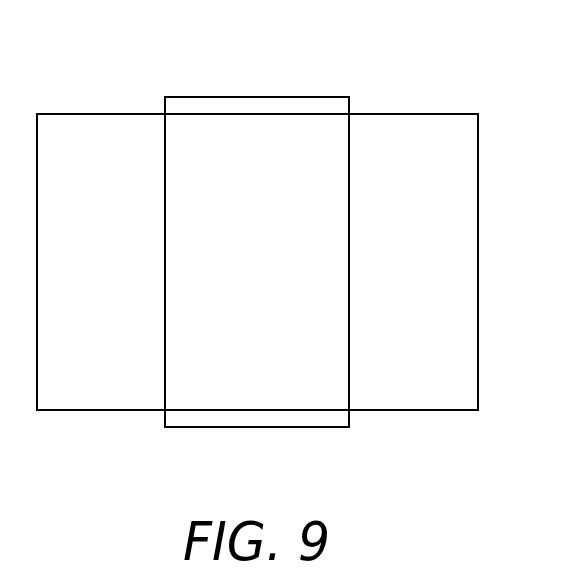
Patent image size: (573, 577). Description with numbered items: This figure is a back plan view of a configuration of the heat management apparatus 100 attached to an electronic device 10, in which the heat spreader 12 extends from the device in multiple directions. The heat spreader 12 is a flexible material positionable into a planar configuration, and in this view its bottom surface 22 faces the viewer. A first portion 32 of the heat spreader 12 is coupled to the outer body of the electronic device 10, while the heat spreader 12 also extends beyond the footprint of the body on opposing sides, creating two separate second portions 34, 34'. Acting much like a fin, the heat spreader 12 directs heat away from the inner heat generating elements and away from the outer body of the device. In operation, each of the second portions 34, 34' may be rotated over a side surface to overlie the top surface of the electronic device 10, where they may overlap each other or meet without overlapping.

The assembly 100 is at (262, 80).
The substrate 10 is at (416, 120).
The heat spreader 12 is at (468, 167).
The bottom surface 22 is at (467, 262).
The first portion 32 is at (257, 418).
The second portion 34 is at (101, 286).
The second portion 34' is at (413, 286).